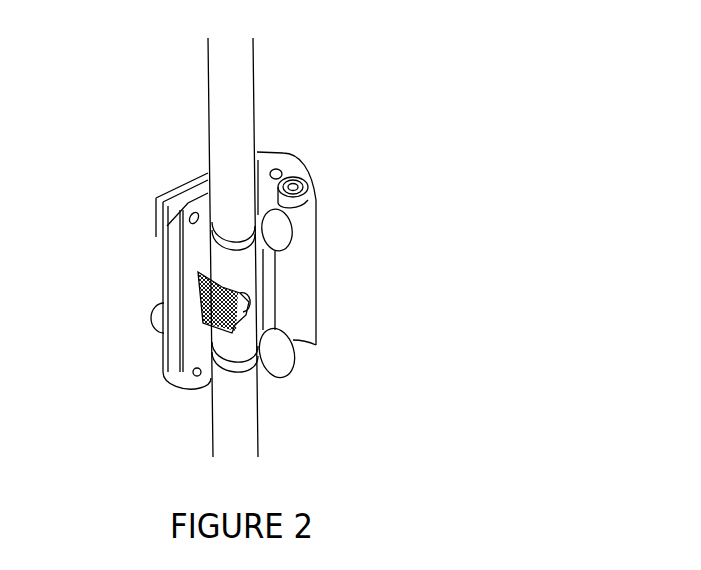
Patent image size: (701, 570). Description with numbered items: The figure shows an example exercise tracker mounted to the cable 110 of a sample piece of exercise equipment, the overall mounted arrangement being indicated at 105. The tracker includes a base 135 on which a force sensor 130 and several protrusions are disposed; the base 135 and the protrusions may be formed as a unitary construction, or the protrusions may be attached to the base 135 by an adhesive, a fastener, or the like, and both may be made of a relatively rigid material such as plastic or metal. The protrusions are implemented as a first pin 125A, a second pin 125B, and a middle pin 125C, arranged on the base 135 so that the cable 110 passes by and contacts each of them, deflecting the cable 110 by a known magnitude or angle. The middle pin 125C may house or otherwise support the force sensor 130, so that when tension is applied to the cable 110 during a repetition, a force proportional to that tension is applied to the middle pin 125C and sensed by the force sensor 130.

The mounting assembly 105 is at (108, 205).
The cable 110 is at (253, 115).
The first pin 125A is at (293, 222).
The second pin 125B is at (295, 347).
The middle pin 125C is at (250, 302).
The force sensor 130 is at (198, 298).
The base 135 is at (197, 187).